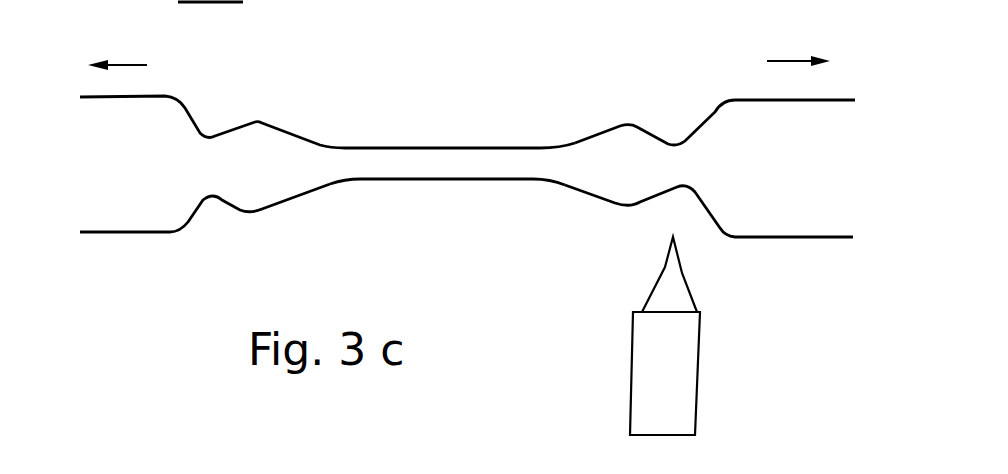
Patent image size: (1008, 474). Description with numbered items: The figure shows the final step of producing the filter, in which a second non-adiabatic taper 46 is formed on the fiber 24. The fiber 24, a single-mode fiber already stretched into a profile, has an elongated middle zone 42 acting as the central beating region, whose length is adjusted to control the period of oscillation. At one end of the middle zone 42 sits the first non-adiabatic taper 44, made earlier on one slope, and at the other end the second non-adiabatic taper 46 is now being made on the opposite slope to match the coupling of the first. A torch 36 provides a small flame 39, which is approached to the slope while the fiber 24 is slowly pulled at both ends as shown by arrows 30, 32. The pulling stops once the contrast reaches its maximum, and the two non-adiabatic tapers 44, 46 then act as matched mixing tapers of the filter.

The arrow 30 is at (118, 65).
The arrow 32 is at (795, 60).
The first non-adiabatic taper 44 is at (208, 136).
The middle zone 42 is at (437, 160).
The second non-adiabatic taper 46 is at (680, 143).
The fiber 24 is at (112, 213).
The flame 39 is at (665, 288).
The torch 36 is at (678, 402).